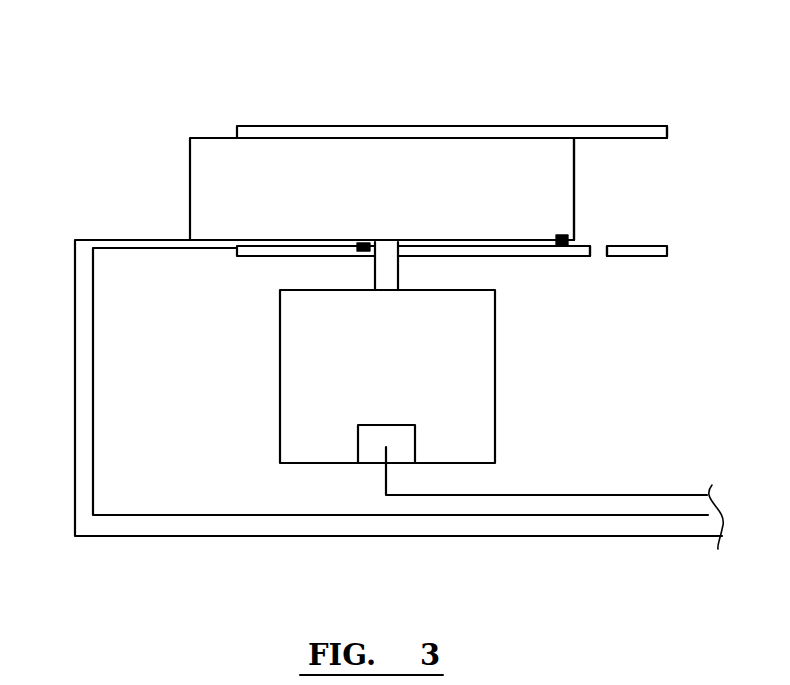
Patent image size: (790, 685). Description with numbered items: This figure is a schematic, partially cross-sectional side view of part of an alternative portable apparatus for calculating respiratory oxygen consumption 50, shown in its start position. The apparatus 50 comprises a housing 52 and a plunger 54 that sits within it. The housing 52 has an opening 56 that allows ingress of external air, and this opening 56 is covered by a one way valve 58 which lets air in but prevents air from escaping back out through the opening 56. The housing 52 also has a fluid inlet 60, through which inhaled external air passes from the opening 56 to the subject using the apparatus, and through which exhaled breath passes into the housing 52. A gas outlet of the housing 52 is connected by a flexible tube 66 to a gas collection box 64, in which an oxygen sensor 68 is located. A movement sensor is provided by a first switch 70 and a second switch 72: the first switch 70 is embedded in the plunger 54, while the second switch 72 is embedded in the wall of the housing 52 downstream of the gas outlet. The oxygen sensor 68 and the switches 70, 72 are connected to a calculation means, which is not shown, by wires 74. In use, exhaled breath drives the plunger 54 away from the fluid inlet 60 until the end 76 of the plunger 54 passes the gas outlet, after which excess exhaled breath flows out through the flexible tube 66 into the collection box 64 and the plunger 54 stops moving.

The portable apparatus for calculating respiratory oxygen consumption 50 is at (678, 221).
The housing 52 is at (650, 130).
The plunger 54 is at (538, 158).
The opening 56 is at (602, 257).
The one way valve 58 is at (600, 244).
The fluid inlet 60 is at (678, 197).
The gas collection box 64 is at (495, 372).
The flexible tube 66 is at (390, 267).
The oxygen sensor 68 is at (373, 452).
The first switch 70 is at (566, 258).
The second switch 72 is at (363, 243).
The wires 74 is at (613, 538).
The end of the plunger 76 is at (560, 185).